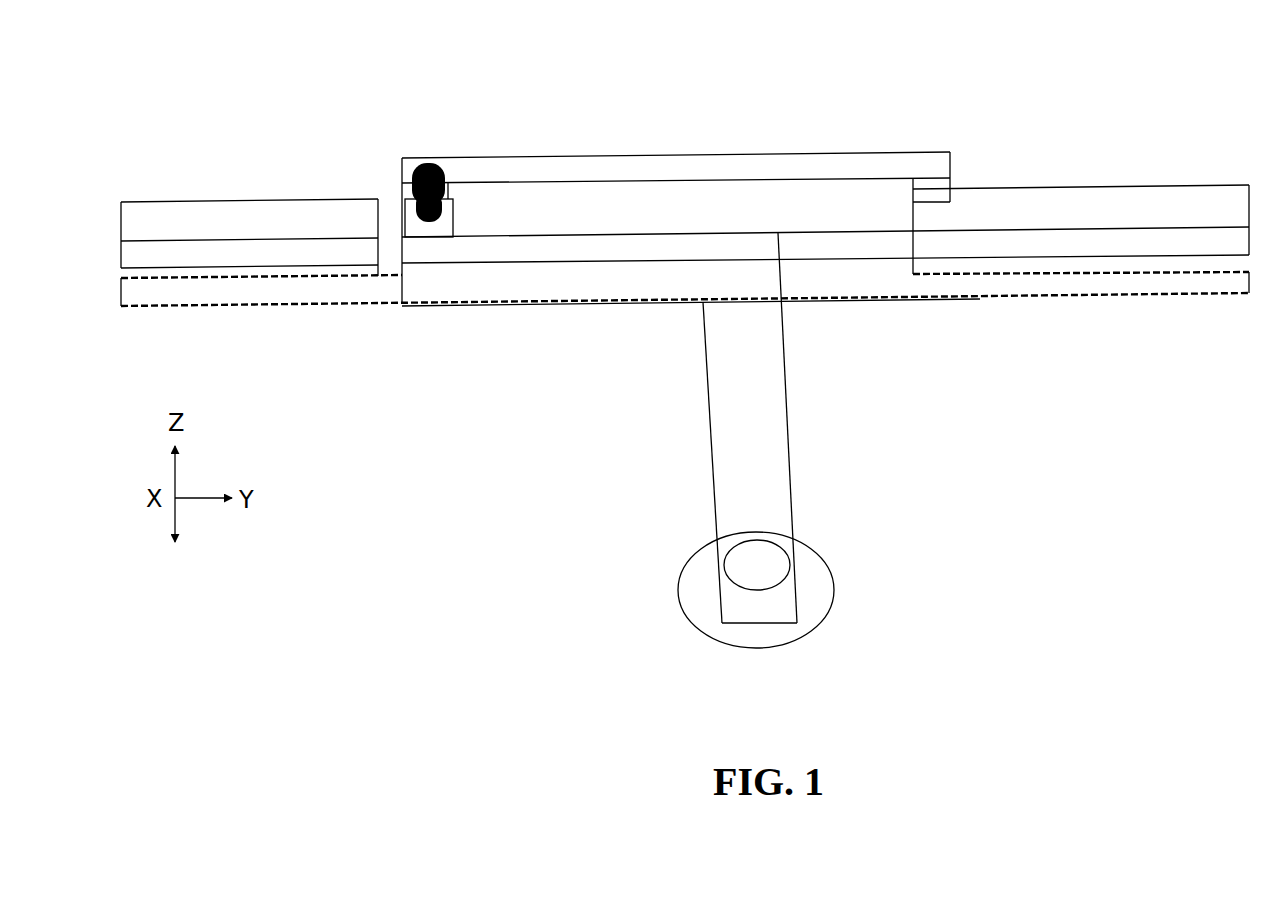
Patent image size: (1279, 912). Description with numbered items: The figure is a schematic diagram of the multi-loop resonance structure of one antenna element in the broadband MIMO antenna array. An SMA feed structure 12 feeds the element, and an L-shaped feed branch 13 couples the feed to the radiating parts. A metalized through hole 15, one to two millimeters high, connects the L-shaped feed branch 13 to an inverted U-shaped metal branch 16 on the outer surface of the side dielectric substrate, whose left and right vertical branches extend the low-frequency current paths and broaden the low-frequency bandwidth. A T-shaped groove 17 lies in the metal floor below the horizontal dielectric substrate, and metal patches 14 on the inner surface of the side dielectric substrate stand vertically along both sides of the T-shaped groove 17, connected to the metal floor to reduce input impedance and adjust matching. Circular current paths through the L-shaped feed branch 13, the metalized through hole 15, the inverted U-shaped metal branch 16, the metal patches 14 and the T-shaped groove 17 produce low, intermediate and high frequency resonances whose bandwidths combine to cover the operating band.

The SMA feed structure 12 is at (756, 570).
The L-shaped feed branch 13 is at (749, 447).
The metal patches on an inner surface of a side dielectric substrate 14 is at (255, 218).
The metalized through hole 15 is at (429, 168).
The inverted U-shaped metal branch on an outer surface of the side dielectric substr 16 is at (668, 166).
The T-shaped groove 17 is at (877, 281).